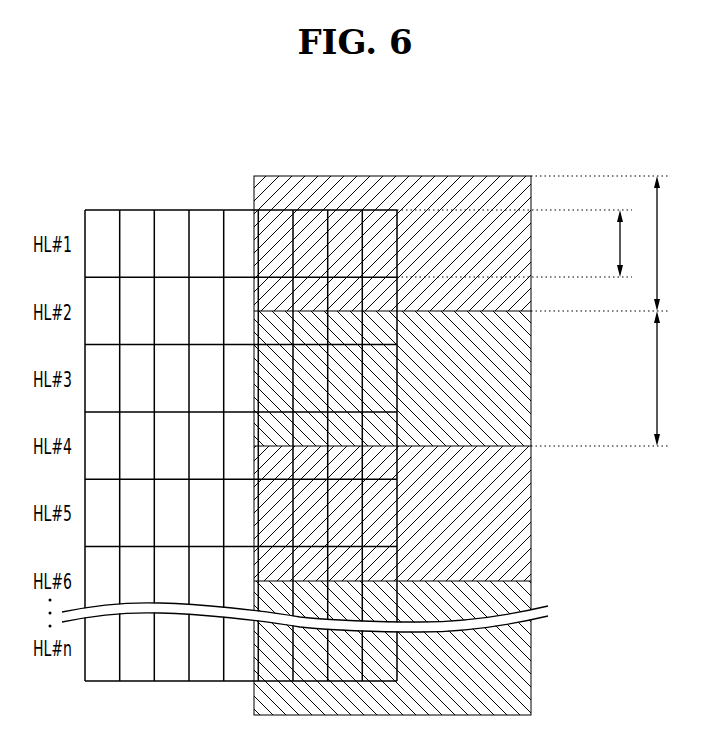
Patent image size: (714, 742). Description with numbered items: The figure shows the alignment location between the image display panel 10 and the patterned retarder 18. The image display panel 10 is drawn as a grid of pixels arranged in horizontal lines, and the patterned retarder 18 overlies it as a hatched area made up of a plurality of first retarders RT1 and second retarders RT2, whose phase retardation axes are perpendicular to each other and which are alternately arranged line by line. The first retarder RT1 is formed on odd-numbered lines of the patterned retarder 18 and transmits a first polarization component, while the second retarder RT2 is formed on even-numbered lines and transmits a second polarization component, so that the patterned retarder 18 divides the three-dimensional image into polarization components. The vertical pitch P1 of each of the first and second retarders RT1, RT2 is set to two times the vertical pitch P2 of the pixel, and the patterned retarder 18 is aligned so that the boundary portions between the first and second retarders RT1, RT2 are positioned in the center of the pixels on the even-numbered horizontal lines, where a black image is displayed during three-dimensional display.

The image display panel 10 is at (138, 208).
The patterned retarder 18 is at (426, 415).
The first retarder RT1 is at (531, 233).
The second retarder RT2 is at (522, 380).
The vertical pitch of each of the first and second retarders P1 is at (667, 311).
The vertical pitch of the pixel P2 is at (630, 243).